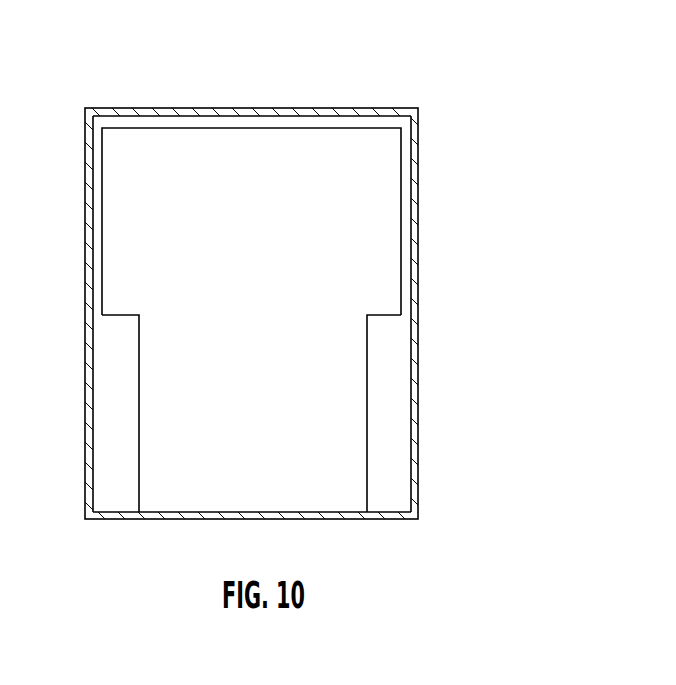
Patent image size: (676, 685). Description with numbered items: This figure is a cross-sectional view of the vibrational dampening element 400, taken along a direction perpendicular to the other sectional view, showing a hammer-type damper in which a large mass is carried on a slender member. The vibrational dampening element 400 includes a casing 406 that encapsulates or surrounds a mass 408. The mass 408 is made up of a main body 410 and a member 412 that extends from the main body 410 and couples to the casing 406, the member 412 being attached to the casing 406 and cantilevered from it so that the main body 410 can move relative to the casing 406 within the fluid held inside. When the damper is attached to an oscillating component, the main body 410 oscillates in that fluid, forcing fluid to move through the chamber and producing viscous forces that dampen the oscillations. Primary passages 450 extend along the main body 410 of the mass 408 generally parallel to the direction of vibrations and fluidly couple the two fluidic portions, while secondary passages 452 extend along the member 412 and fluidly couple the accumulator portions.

The vibrational dampening element 400 is at (461, 57).
The casing 406 is at (328, 110).
The mass 408 is at (91, 113).
The main body 410 is at (352, 183).
The member 412 is at (346, 376).
The primary passages 450 is at (102, 186).
The secondary passages 452 is at (401, 456).